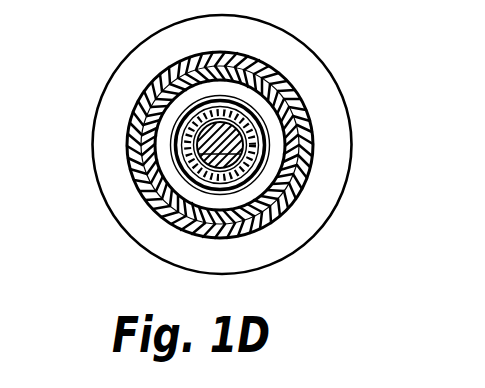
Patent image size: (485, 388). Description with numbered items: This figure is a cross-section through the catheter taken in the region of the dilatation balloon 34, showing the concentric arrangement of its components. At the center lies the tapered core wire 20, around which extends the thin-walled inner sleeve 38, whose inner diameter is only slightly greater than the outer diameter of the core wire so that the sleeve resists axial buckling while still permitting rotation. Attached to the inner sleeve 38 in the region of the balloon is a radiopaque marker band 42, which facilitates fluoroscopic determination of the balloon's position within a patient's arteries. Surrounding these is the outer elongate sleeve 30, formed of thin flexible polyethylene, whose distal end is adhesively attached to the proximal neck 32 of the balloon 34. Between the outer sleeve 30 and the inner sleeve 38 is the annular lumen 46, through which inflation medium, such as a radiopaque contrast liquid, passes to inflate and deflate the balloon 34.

The tapered core wire 20 is at (196, 152).
The outer elongate sleeve 30 is at (311, 180).
The proximal neck of the dilatation balloon 32 is at (312, 145).
The dilatation balloon 34 is at (338, 79).
The inner sleeve 38 is at (178, 128).
The radiopaque marker band 42 is at (244, 100).
The annular lumen 46 is at (187, 97).